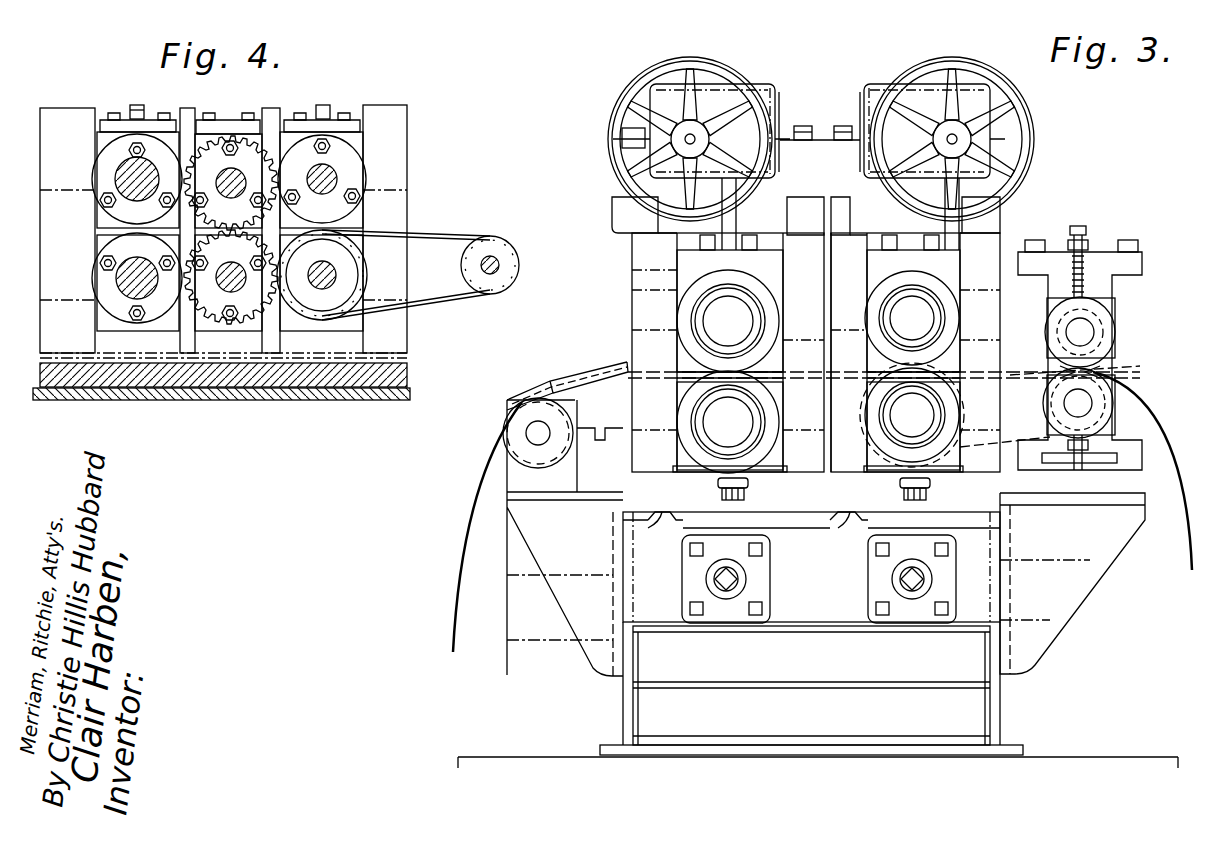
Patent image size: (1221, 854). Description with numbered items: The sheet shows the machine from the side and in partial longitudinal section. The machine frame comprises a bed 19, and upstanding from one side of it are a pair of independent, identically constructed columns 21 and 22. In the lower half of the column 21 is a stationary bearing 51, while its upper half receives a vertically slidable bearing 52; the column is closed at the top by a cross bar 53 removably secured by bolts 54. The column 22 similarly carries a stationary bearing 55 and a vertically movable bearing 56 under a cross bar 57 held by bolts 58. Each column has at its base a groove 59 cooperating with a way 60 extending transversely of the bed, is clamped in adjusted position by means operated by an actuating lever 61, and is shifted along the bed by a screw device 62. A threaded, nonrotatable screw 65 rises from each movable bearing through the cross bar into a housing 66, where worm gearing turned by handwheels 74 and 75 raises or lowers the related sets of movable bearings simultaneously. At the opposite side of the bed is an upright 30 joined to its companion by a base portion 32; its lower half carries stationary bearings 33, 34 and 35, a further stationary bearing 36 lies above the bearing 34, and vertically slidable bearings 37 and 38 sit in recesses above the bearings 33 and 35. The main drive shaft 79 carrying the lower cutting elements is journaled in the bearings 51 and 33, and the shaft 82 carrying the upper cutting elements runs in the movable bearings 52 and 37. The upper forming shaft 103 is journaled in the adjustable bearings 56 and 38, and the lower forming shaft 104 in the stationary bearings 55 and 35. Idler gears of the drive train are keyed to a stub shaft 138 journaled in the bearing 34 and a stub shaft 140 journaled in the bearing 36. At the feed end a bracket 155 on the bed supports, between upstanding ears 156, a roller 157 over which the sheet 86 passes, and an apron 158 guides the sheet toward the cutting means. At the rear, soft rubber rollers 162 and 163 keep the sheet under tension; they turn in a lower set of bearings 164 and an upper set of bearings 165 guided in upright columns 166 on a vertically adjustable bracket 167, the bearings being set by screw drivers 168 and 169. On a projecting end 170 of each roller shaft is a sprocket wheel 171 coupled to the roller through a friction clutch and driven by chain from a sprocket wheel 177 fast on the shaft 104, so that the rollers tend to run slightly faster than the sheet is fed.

In FIG. 4, the bed 19 is at (258, 392).
In FIG. 3, the bed 19 is at (810, 615).
In FIG. 3, the column 21 is at (622, 304).
In FIG. 3, the column 22 is at (1019, 481).
In FIG. 4, the upright 30 is at (380, 140).
In FIG. 4, the base portion 32 is at (385, 370).
In FIG. 4, the stationary bearing 33 is at (105, 322).
In FIG. 4, the stationary bearing 34 is at (228, 290).
In FIG. 4, the stationary bearing 35 is at (355, 320).
In FIG. 4, the stationary bearing 36 is at (262, 130).
In FIG. 4, the vertically slidable bearing 37 is at (105, 140).
In FIG. 4, the vertically slidable bearing 38 is at (352, 135).
In FIG. 3, the stationary bearing 51 is at (682, 455).
In FIG. 3, the vertically slidable bearing 52 is at (682, 262).
In FIG. 3, the cross bar 53 is at (635, 148).
In FIG. 3, the bolts 54 is at (803, 126).
In FIG. 3, the stationary bearing 55 is at (868, 448).
In FIG. 3, the vertically movable bearing 56 is at (950, 262).
In FIG. 3, the cross bar 57 is at (1003, 147).
In FIG. 3, the bolts 58 is at (843, 126).
In FIG. 3, the groove 59 is at (672, 515).
In FIG. 3, the way 60 is at (668, 518).
In FIG. 3, the actuating lever 61 is at (752, 482).
In FIG. 3, the screw device 62 is at (724, 590).
In FIG. 4, the screw 65 is at (133, 108).
In FIG. 3, the screw 65 is at (738, 226).
In FIG. 3, the housing 66 is at (762, 90).
In FIG. 3, the handwheel 74 is at (655, 72).
In FIG. 3, the handwheel 75 is at (1030, 172).
In FIG. 4, the shaft 79 is at (125, 282).
In FIG. 3, the shaft 79 is at (738, 424).
In FIG. 4, the shaft 82 is at (125, 182).
In FIG. 3, the shaft 82 is at (740, 325).
In FIG. 3, the sheet 86 is at (462, 595).
In FIG. 4, the shaft 103 is at (338, 178).
In FIG. 3, the shaft 103 is at (900, 318).
In FIG. 4, the shaft 104 is at (336, 269).
In FIG. 3, the shaft 104 is at (900, 412).
In FIG. 4, the stub shaft 138 is at (220, 290).
In FIG. 4, the stub shaft 140 is at (224, 175).
In FIG. 3, the bracket 155 is at (548, 595).
In FIG. 3, the ears 156 is at (512, 470).
In FIG. 3, the roller 157 is at (508, 420).
In FIG. 3, the apron 158 is at (590, 372).
In FIG. 3, the soft rubber roller 162 is at (1120, 372).
In FIG. 3, the soft rubber roller 163 is at (1110, 345).
In FIG. 3, the lower set of bearings 164 is at (1100, 415).
In FIG. 3, the upper set of bearings 165 is at (1100, 312).
In FIG. 3, the upright columns 166 is at (1092, 455).
In FIG. 3, the bracket 167 is at (1120, 532).
In FIG. 3, the screw driver 168 is at (1100, 470).
In FIG. 3, the screw driver 169 is at (1090, 255).
In FIG. 4, the projecting shaft end 170 is at (490, 255).
In FIG. 4, the sprocket wheel 171 is at (502, 256).
In FIG. 4, the sprocket wheel 177 is at (345, 286).